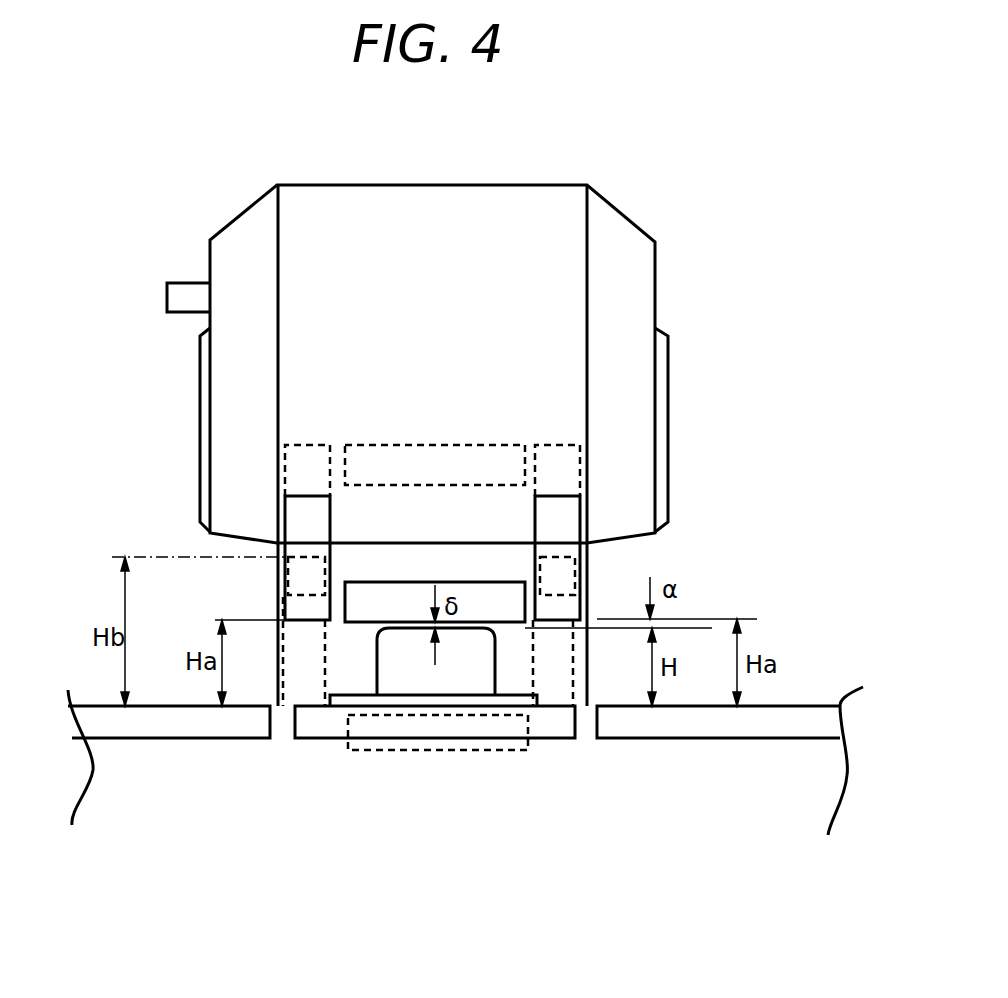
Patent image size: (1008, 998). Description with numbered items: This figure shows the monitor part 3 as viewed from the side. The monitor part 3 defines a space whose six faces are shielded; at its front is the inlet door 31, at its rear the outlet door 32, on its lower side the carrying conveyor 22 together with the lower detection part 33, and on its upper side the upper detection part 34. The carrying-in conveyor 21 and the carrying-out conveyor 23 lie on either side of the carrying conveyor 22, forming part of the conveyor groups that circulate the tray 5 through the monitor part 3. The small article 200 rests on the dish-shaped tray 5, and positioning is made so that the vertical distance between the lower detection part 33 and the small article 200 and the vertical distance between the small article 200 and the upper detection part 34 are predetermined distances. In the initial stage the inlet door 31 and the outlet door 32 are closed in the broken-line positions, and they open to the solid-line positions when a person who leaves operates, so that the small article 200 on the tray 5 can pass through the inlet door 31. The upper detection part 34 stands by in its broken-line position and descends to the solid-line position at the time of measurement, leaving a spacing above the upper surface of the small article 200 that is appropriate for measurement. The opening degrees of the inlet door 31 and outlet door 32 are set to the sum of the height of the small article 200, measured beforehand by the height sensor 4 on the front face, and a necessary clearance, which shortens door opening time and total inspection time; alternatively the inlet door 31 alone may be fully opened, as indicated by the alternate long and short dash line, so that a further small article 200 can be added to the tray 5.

The monitor part 3 is at (338, 427).
The height sensor 4 is at (178, 297).
The tray 5 is at (447, 697).
The carrying-in conveyor 21 is at (152, 725).
The carrying conveyor 22 is at (543, 725).
The carrying-out conveyor 23 is at (728, 725).
The inlet door 31 is at (300, 516).
The outlet door 32 is at (562, 510).
The lower detection part 33 is at (350, 768).
The upper detection part 34 is at (405, 592).
The small article 200 is at (418, 672).